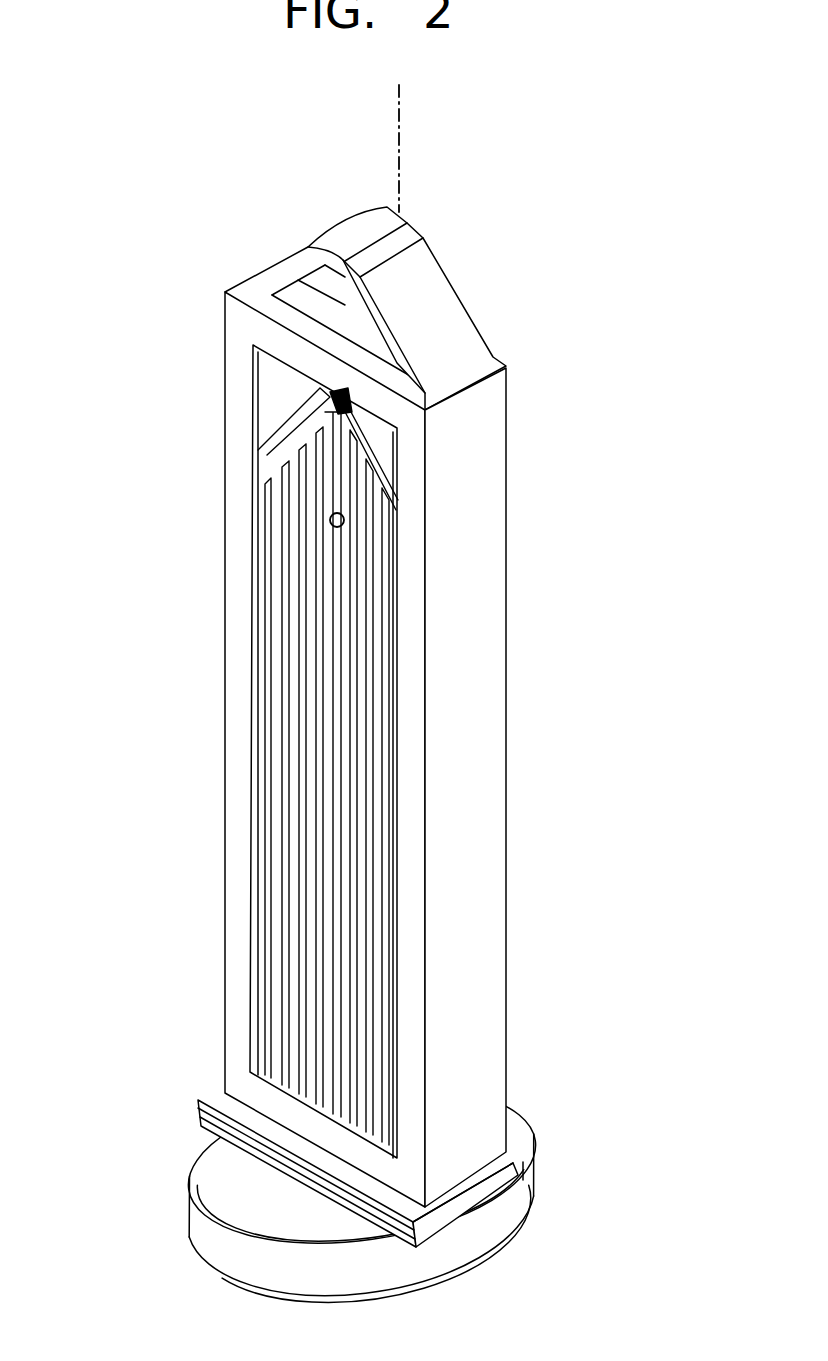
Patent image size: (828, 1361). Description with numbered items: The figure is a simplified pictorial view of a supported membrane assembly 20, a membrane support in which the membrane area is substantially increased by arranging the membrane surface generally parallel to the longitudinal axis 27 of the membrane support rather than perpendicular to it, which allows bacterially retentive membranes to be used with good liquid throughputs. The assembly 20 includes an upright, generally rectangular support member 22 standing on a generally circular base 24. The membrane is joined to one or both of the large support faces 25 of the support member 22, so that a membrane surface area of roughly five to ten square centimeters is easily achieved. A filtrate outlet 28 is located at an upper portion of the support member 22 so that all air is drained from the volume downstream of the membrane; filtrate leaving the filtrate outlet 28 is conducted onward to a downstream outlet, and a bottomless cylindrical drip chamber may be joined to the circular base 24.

The supported membrane assembly 20 is at (503, 254).
The support member 22 is at (477, 495).
The circular base 24 is at (508, 1217).
The large support faces 25 is at (295, 617).
The longitudinal axis 27 is at (398, 140).
The filtrate outlet 28 is at (330, 523).